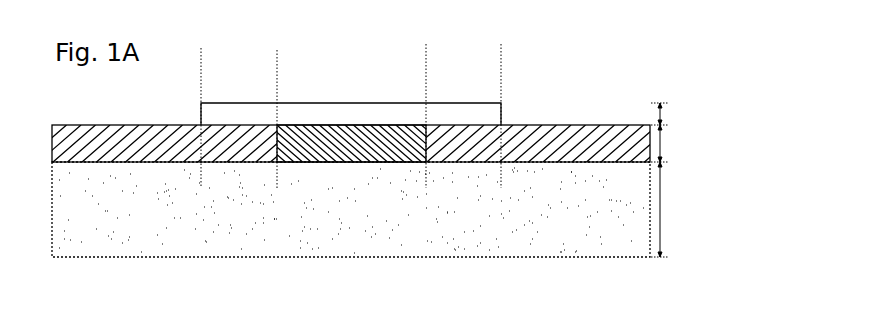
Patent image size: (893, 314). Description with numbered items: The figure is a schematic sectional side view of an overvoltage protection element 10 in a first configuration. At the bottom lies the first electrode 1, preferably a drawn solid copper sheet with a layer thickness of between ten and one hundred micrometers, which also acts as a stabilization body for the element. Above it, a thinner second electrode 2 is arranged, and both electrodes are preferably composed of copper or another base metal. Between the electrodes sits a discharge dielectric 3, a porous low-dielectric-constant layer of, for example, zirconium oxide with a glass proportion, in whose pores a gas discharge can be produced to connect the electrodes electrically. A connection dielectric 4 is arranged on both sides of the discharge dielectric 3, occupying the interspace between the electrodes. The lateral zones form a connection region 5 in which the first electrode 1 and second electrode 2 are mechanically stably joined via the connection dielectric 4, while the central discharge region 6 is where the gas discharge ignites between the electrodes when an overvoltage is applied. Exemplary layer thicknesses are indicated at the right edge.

The overvoltage protection element 10 is at (475, 28).
The first electrode 1 is at (435, 222).
The second electrode 2 is at (488, 113).
The discharge dielectric 3 is at (327, 150).
The connection dielectric 4 is at (560, 138).
The connection region 5 is at (351, 116).
The discharge region 6 is at (349, 107).